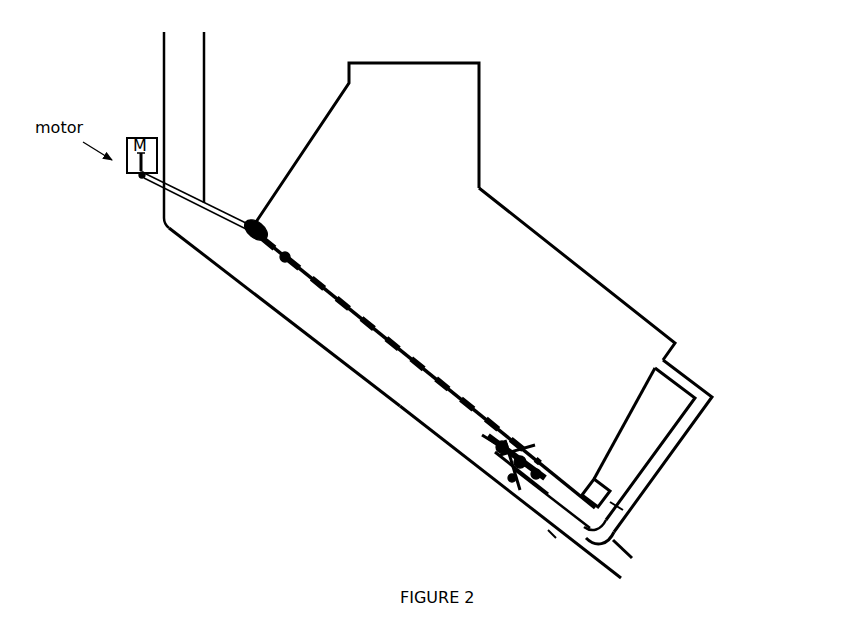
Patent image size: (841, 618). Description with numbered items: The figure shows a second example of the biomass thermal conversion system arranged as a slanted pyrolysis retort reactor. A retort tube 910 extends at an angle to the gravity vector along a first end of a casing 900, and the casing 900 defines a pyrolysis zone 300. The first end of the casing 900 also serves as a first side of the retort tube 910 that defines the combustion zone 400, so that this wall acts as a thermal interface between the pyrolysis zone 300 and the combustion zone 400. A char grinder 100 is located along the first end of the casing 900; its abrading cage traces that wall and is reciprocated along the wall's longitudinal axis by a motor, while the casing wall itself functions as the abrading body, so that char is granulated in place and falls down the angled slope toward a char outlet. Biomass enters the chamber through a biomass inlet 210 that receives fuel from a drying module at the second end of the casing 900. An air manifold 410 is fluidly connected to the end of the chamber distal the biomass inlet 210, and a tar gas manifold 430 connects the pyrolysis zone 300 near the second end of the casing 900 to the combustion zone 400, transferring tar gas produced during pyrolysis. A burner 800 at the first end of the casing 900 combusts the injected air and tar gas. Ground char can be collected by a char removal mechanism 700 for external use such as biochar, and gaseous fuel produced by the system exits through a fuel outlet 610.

The fuel outlet 610 is at (155, 55).
The biomass inlet 210 is at (398, 50).
The casing 900 is at (558, 242).
The pyrolysis zone 300 is at (423, 369).
The char grinder 100 is at (453, 383).
The tar gas manifold 430 is at (693, 372).
The retort tube 910 is at (318, 347).
The combustion zone 400 is at (398, 402).
The burner 800 is at (495, 490).
The char removal mechanism 700 is at (636, 513).
The air manifold 410 is at (642, 567).